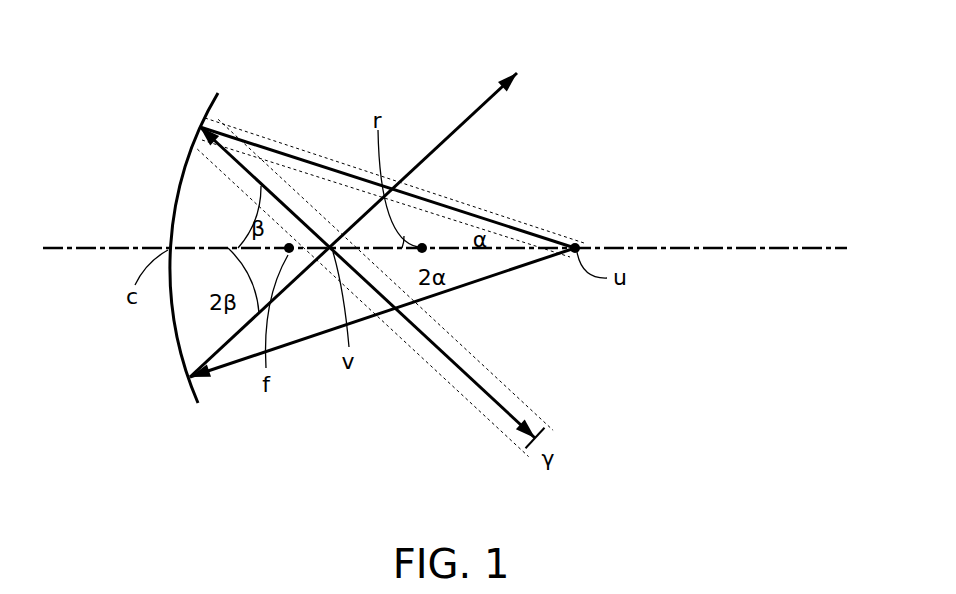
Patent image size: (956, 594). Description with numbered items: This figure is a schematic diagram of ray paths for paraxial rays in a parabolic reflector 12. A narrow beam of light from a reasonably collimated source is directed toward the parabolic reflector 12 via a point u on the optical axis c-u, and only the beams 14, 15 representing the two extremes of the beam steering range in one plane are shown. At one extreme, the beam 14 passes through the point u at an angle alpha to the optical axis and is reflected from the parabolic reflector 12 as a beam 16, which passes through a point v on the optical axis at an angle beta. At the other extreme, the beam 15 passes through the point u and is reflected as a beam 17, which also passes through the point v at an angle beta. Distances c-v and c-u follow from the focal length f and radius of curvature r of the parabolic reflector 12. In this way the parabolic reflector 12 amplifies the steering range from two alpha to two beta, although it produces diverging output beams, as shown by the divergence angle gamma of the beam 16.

The parabolic reflector 12 is at (185, 160).
The beam 14 is at (495, 223).
The beam 15 is at (488, 277).
The beam 16 is at (495, 402).
The beam 17 is at (478, 112).